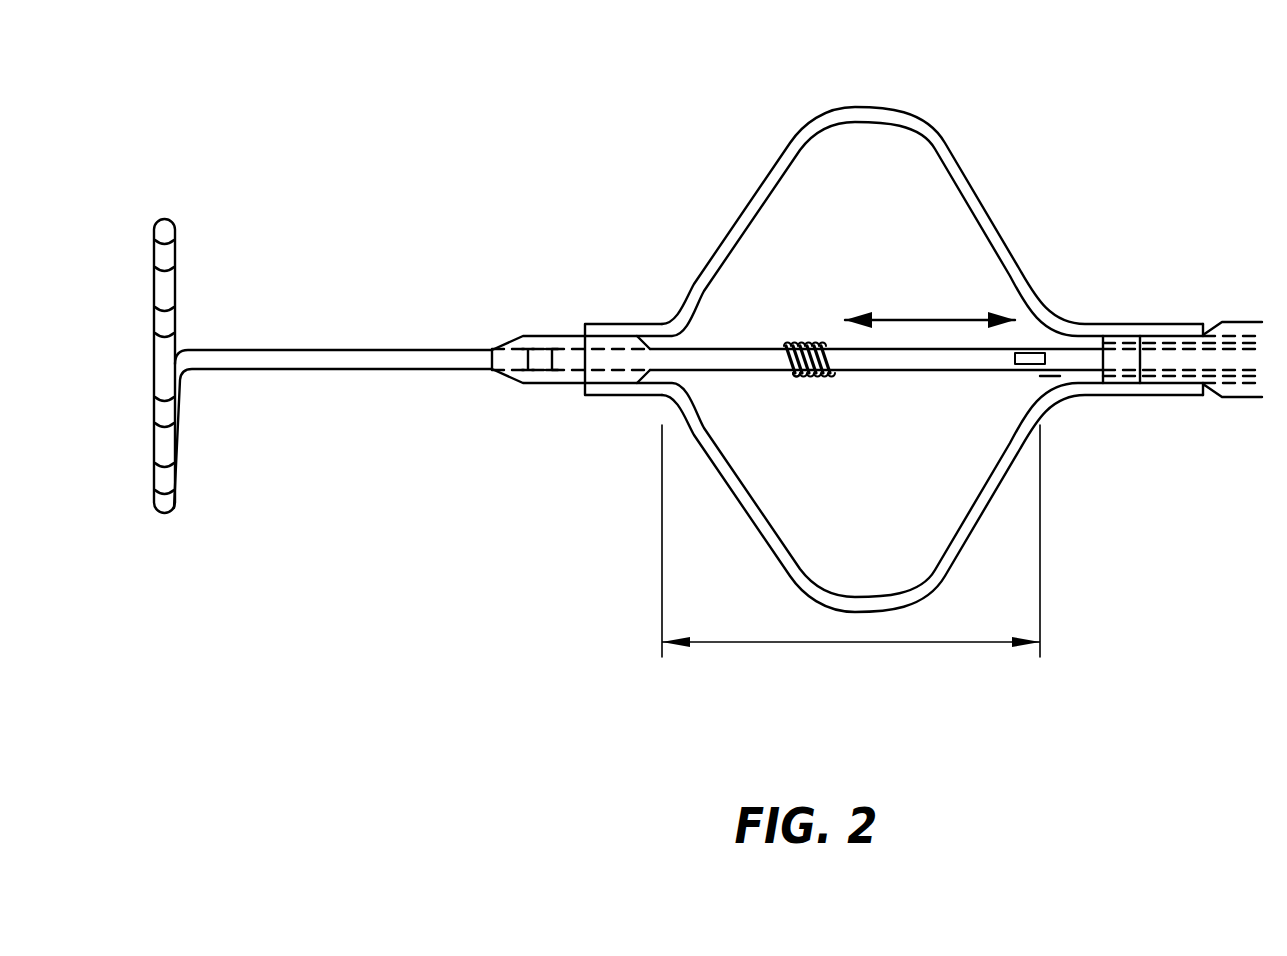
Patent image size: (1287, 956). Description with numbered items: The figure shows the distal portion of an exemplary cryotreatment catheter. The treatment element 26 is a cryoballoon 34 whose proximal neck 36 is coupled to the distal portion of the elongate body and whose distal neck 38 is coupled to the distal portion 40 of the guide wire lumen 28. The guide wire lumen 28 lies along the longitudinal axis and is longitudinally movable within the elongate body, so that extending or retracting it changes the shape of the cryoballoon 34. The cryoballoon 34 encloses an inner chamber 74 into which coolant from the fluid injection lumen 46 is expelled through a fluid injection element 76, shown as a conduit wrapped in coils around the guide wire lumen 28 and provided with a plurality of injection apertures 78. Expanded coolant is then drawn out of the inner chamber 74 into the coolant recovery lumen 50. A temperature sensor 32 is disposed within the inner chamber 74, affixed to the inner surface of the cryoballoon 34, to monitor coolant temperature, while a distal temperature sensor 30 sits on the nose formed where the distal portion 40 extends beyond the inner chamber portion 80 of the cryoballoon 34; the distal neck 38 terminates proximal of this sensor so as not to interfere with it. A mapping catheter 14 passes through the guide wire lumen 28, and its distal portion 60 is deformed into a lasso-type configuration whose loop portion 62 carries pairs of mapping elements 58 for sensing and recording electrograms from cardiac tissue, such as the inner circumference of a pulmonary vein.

The mapping catheter 14 is at (275, 360).
The treatment element 26 is at (917, 320).
The guide wire lumen 28 is at (751, 376).
The distal temperature sensor 30 is at (538, 362).
The temperature sensor 32 is at (1033, 350).
The cryoballoon 34 is at (892, 123).
The proximal neck 36 is at (1140, 330).
The distal neck 38 is at (611, 396).
The distal portion of the guide wire lumen 40 is at (548, 335).
The fluid injection lumen 46 is at (1046, 376).
The coolant recovery lumen 50 is at (1193, 342).
The mapping elements 58 is at (163, 474).
The distal portion of the mapping catheter 60 is at (128, 220).
The loop portion 62 is at (162, 291).
The inner chamber 74 is at (866, 532).
The fluid injection element 76 is at (798, 343).
The injection apertures 78 is at (806, 375).
The inner chamber portion 80 is at (852, 645).